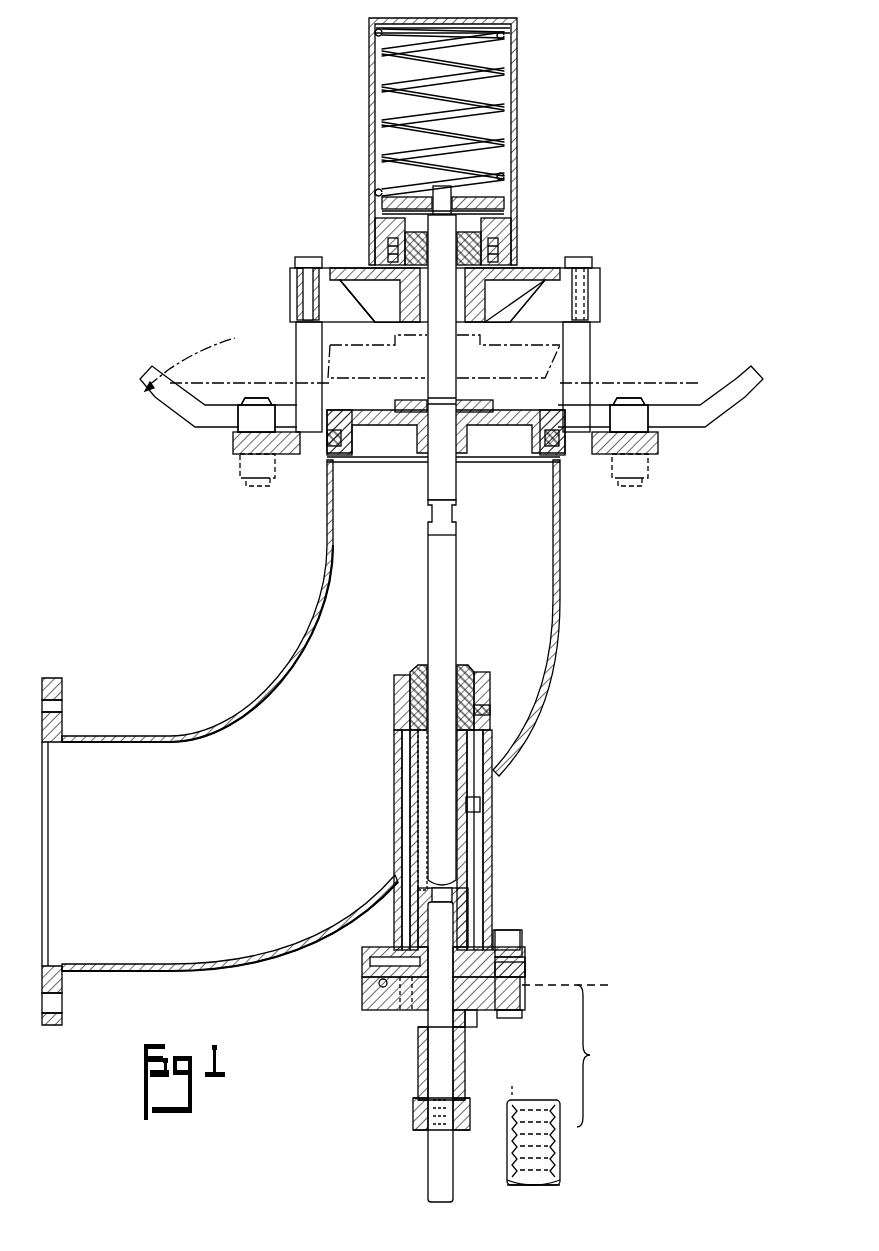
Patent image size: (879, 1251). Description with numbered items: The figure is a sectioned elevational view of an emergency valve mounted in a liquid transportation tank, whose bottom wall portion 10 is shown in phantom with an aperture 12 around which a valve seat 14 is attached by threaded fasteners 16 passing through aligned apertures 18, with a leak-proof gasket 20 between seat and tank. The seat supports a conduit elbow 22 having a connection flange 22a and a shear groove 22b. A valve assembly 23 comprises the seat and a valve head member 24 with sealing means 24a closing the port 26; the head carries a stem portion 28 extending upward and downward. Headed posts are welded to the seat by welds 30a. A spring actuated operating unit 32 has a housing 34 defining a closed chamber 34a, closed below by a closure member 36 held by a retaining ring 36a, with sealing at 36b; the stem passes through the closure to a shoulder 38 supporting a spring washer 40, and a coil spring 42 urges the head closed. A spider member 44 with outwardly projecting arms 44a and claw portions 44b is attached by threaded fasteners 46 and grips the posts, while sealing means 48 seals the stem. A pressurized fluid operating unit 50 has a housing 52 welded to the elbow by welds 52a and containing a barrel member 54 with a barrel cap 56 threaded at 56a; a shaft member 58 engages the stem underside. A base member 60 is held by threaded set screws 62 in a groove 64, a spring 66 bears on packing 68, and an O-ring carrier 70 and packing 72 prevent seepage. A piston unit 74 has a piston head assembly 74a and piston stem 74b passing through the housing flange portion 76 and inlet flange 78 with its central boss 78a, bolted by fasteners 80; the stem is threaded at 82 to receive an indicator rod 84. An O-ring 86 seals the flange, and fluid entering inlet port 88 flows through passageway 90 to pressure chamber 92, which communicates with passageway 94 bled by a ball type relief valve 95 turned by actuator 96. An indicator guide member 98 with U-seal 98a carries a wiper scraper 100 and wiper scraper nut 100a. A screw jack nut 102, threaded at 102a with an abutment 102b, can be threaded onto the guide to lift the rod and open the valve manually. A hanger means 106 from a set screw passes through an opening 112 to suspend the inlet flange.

The fragmentary portion of the bottom wall of a liquid transportation tank 10 is at (175, 343).
The aperture 12 is at (600, 387).
The valve seat 14 is at (667, 459).
The threaded fasteners 16 is at (245, 396).
The aligned apertures 18 is at (235, 455).
The leak-proof gasket 20 is at (668, 440).
The conduit elbow 22 is at (560, 570).
The connection flange 22a is at (55, 676).
The shear groove 22b is at (325, 525).
The valve assembly 23 is at (618, 243).
The valve head member 24 is at (595, 310).
The sealing means 24a is at (556, 448).
The port 26 is at (360, 458).
The stem portion 28 is at (432, 470).
The welds 30a is at (312, 462).
The spring actuated operating unit 32 is at (529, 102).
The housing 34 is at (515, 62).
The closed chamber 34a is at (490, 55).
The closure member 36 is at (505, 228).
The retaining ring 36a is at (536, 242).
The screw 36b is at (392, 252).
The shoulder 38 is at (455, 210).
The spring washer 40 is at (500, 214).
The coil spring 42 is at (392, 96).
The spider member 44 is at (342, 259).
The outwardly projecting arms 44a is at (385, 322).
The claw portions 44b is at (292, 280).
The threaded fasteners 46 is at (388, 290).
The sealing means 48 is at (498, 322).
The pressurized fluid operating unit 50 is at (503, 833).
The housing 52 is at (495, 744).
The welds 52a is at (498, 772).
The barrel member 54 is at (470, 880).
The barrel cap 56 is at (490, 700).
The threaded connection 56a is at (492, 716).
The shaft member 58 is at (458, 612).
The base member 60 is at (412, 828).
The threaded set screws 62 is at (482, 800).
The groove 64 is at (412, 800).
The spring 66 is at (400, 755).
The packing 68 is at (398, 700).
The O-ring carrier 70 is at (476, 672).
The packing 72 is at (420, 670).
The piston unit 74 is at (483, 919).
The piston head assembly 74a is at (455, 900).
The piston stem 74b is at (466, 1022).
The housing flange portion 76 is at (395, 968).
The pressurized fluid inlet flange 78 is at (395, 995).
The central boss 78a is at (372, 958).
The threaded nut and bolt fasteners 80 is at (526, 957).
The threaded lower end 82 is at (425, 1150).
The indicator rod 84 is at (448, 1175).
The O-ring 86 is at (526, 970).
The pressurized fluid inlet port 88 is at (518, 1006).
The passageway 90 is at (478, 1020).
The pressure chamber 92 is at (500, 937).
The passageway 94 is at (402, 1012).
The ball type relief valve 95 is at (395, 1012).
The actuator 96 is at (380, 985).
The indicator guide member 98 is at (420, 1070).
The U-seal 98a is at (418, 1045).
The wiper scraper 100 is at (418, 1130).
The wiper scraper nut 100a is at (412, 1118).
The screw jack nut 102 is at (562, 1147).
The interior threading 102a is at (512, 1098).
The abutment 102b is at (560, 1177).
The hanger means 106 is at (480, 850).
The opening 112 is at (587, 1050).